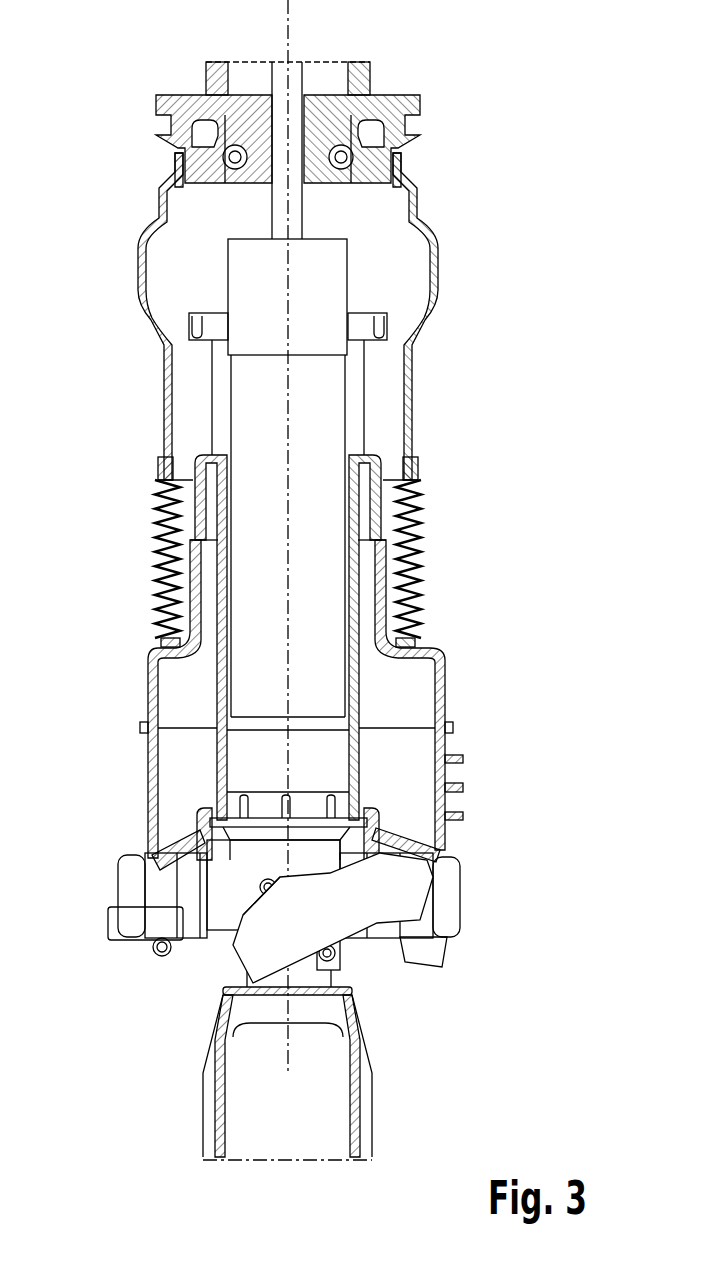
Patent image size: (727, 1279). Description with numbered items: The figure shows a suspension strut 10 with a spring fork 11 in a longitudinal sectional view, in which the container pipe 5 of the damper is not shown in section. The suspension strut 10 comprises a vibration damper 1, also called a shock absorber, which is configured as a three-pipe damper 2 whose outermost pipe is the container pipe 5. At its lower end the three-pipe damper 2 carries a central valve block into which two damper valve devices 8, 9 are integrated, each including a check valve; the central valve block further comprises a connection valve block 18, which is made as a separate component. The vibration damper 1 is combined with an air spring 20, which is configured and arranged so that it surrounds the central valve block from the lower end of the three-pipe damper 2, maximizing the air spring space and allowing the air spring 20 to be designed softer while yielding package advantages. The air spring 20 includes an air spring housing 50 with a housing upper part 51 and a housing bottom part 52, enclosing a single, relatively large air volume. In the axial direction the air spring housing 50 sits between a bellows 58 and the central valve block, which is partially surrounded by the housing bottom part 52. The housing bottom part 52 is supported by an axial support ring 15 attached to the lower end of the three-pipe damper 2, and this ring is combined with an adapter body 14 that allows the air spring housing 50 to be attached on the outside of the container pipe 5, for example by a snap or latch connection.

The vibration damper 1 is at (458, 72).
The three-pipe damper 2 is at (440, 383).
The container pipe 5 is at (324, 499).
The bellows 58 is at (417, 550).
The adapter body 14 is at (258, 803).
The axial support ring 15 is at (322, 806).
The housing upper part 51 is at (147, 712).
The air spring housing 50 is at (138, 780).
The housing bottom part 52 is at (148, 840).
The air spring 20 is at (477, 802).
The damper valve device 8 is at (99, 943).
The damper valve device 9 is at (486, 928).
The connection valve block 18 is at (277, 937).
The suspension strut 10 is at (391, 1123).
The spring fork 11 is at (225, 1145).